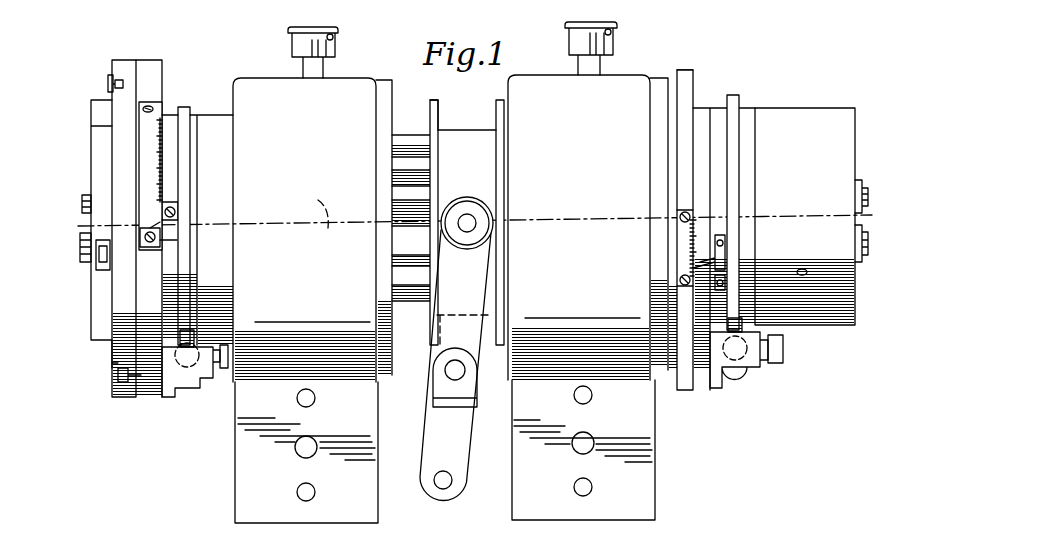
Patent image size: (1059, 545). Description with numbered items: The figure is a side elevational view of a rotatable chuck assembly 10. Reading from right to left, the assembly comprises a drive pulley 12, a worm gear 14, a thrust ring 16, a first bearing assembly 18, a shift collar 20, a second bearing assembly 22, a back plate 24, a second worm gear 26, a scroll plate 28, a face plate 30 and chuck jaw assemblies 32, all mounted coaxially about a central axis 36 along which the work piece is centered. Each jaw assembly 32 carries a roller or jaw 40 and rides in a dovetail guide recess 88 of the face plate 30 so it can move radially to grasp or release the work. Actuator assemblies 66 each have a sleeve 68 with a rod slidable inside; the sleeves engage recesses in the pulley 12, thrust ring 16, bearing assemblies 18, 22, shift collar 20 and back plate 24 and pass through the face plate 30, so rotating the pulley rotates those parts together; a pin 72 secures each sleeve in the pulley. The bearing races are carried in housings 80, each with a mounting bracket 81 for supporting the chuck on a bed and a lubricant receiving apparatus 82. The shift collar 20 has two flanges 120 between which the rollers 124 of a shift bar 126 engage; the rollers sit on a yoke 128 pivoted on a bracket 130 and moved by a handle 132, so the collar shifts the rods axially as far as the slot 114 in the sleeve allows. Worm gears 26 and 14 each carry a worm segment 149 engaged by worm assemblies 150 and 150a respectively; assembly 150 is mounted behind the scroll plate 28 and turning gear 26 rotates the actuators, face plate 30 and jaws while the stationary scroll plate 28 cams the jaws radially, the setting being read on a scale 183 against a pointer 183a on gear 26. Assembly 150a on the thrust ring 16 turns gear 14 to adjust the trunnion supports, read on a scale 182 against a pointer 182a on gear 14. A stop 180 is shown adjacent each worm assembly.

The rotatable chuck assembly 10 is at (700, 60).
The drive pulley 12 is at (800, 110).
The worm gear 14 is at (738, 97).
The thrust ring 16 is at (698, 97).
The first bearing assembly 18 is at (635, 78).
The shift collar 20 is at (453, 130).
The second bearing assembly 22 is at (341, 80).
The back plate 24 is at (200, 113).
The worm gear 26 is at (168, 116).
The scroll plate 28 is at (150, 68).
The face plate 30 is at (117, 62).
The chuck jaw assembly 32 is at (91, 98).
The central axis 36 is at (310, 207).
The roller or jaw 40 is at (88, 215).
The actuator assembly 66 is at (106, 285).
The sleeve 68 is at (412, 143).
The pin 72 is at (802, 269).
The housing 80 is at (262, 370).
The mounting bracket 81 is at (248, 452).
The lubricant receiving apparatus 82 is at (294, 46).
The dovetail guide recess 88 is at (109, 86).
The slot 114 is at (417, 267).
The flange 120 is at (423, 110).
The ring element (roller) 124 is at (468, 197).
The shift bar 126 is at (480, 345).
The yoke 128 is at (450, 329).
The bracket 130 is at (437, 404).
The handle 132 is at (442, 497).
The worm segment 149 is at (187, 351).
The worm assembly 150 is at (201, 393).
The worm assembly 150a is at (742, 388).
The stop 180 is at (792, 353).
The scale 182 is at (684, 225).
The pointer 182a is at (702, 270).
The scale 183 is at (163, 158).
The pointer 183a is at (162, 238).